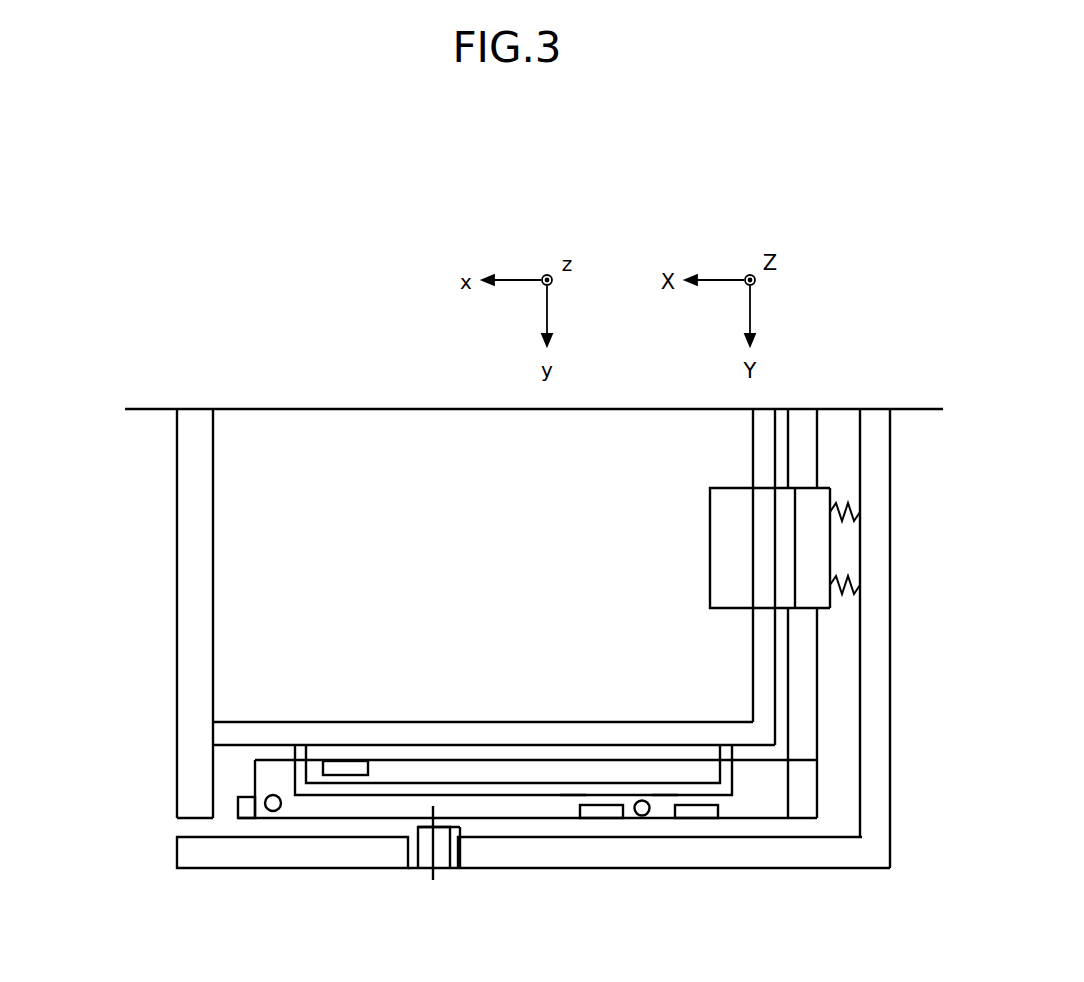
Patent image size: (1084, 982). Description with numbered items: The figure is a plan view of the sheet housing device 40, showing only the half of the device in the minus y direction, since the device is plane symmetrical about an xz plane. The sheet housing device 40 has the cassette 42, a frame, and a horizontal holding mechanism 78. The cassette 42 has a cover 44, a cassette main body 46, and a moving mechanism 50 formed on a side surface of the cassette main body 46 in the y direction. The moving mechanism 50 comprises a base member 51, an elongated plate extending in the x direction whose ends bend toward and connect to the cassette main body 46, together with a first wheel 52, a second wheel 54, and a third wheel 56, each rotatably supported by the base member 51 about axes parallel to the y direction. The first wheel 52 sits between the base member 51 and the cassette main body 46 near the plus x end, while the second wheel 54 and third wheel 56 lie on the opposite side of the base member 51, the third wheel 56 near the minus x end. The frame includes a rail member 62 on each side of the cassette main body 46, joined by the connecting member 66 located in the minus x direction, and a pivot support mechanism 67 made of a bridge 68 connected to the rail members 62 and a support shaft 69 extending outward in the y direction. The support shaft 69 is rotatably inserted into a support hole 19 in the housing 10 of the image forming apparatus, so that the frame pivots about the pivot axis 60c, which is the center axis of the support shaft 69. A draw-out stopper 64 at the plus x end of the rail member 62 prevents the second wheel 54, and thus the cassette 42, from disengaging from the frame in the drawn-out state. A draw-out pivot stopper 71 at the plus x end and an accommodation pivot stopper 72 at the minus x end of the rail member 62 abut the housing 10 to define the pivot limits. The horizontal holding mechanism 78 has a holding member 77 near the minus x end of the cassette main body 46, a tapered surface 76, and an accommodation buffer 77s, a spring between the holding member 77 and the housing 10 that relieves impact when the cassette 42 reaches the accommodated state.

The sheet housing device 40 is at (82, 461).
The cassette 42 is at (172, 520).
The cover 44 is at (197, 577).
The cassette main body 46 is at (256, 735).
The moving mechanism 50 is at (418, 778).
The base member 51 is at (477, 793).
The first wheel 52 is at (347, 762).
The second wheel 54 is at (573, 795).
The third wheel 56 is at (665, 795).
The pivot axis 60c is at (433, 863).
The rail member 62 is at (316, 808).
The draw-out stopper 64 is at (250, 812).
The connecting member 66 is at (803, 687).
The pivot support mechanism 67 is at (396, 888).
The bridge 68 is at (408, 823).
The support shaft 69 is at (431, 848).
The draw-out pivot stopper 71 is at (273, 812).
The accommodation pivot stopper 72 is at (642, 816).
The tapered surface 76 is at (770, 527).
The holding member 77 is at (813, 547).
The accommodation buffer 77s is at (860, 583).
The horizontal holding mechanism 78 is at (710, 553).
The housing 10 is at (539, 869).
The support hole 19 is at (460, 852).